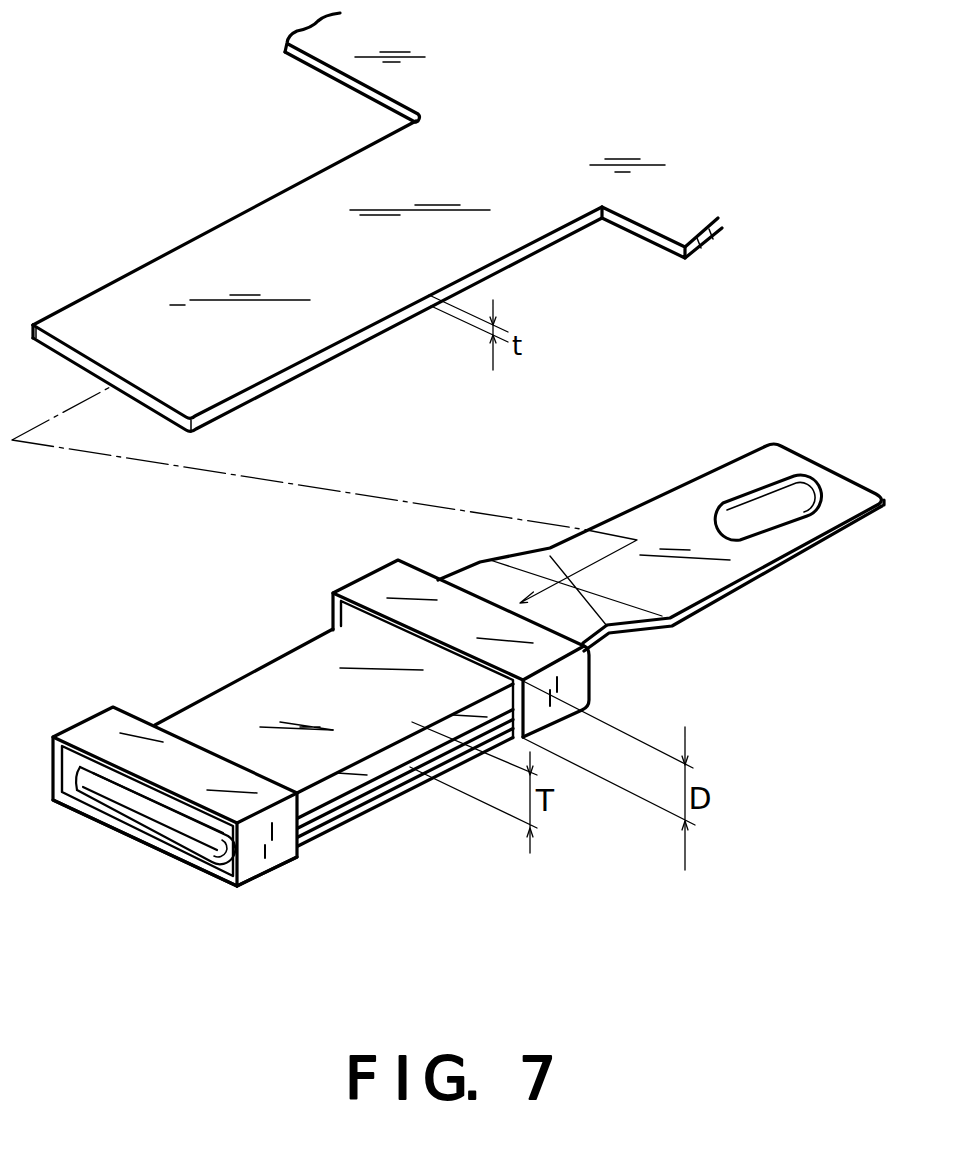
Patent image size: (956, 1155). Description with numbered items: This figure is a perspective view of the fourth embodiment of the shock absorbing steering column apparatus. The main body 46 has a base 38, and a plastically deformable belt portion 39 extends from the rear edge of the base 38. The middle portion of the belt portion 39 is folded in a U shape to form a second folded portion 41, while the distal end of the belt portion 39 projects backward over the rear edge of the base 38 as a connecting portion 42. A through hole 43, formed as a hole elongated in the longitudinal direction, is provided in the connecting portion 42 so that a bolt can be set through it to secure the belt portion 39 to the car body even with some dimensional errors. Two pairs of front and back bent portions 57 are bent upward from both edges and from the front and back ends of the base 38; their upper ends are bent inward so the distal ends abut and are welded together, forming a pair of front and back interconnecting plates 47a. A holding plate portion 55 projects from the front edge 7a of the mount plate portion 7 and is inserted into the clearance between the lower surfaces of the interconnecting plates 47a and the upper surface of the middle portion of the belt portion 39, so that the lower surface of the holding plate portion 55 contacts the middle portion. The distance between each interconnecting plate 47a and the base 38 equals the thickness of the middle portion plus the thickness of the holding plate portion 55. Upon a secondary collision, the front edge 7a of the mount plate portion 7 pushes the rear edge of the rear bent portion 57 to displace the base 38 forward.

The mount plate portion 7 is at (472, 135).
The front edge 7a is at (360, 95).
The holding plate portion 55 is at (135, 293).
The connecting portion 42 is at (661, 523).
The through hole 43 is at (805, 510).
The belt portion 39 is at (610, 633).
The main body 46 is at (344, 737).
The base 38 is at (393, 803).
The interconnecting plate 47a is at (102, 725).
The bent portion 57 is at (52, 782).
The second folded portion 41 is at (157, 817).